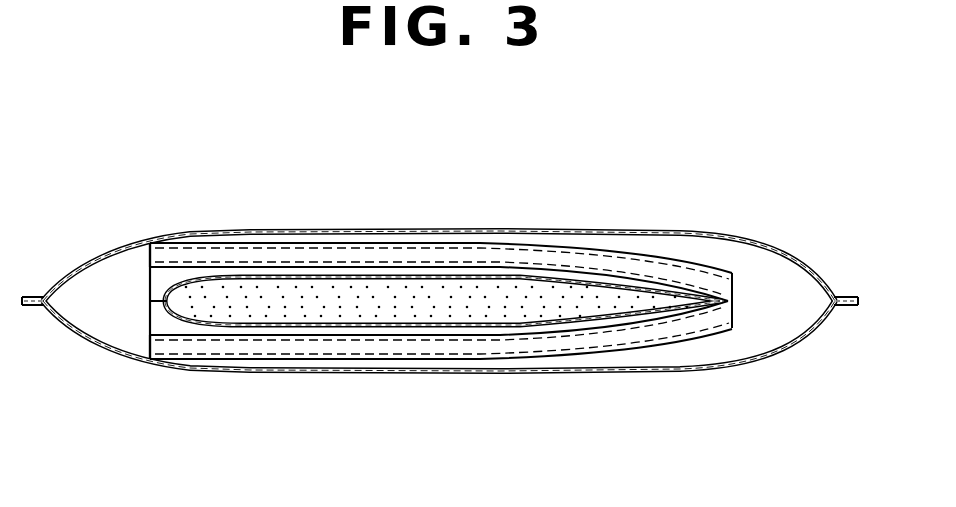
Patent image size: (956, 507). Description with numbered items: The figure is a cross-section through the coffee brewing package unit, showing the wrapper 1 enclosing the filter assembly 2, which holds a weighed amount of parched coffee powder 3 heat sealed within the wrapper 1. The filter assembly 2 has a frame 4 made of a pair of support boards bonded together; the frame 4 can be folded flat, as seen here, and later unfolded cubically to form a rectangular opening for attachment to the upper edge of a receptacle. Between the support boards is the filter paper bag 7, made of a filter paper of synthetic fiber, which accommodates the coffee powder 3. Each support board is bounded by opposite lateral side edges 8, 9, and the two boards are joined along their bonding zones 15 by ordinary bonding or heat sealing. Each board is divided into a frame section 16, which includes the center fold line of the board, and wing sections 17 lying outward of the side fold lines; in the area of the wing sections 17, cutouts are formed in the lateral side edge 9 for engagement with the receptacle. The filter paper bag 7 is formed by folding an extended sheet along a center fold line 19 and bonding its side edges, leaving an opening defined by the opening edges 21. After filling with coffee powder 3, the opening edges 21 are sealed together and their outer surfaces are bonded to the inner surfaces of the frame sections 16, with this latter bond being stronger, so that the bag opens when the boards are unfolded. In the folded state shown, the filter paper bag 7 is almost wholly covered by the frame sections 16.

The wrapper 1 is at (690, 222).
The filter assembly 2 is at (719, 260).
The parched coffee powder 3 is at (375, 295).
The frame 4 is at (630, 245).
The filter paper bag 7 is at (534, 231).
The lateral side edge 8 is at (735, 285).
The lateral side edge 9 is at (148, 258).
The bonding zone 15 is at (456, 256).
The frame section 16 is at (292, 270).
The wing section 17 is at (248, 233).
The center fold line 19 is at (167, 301).
The opening edge 21 is at (708, 320).